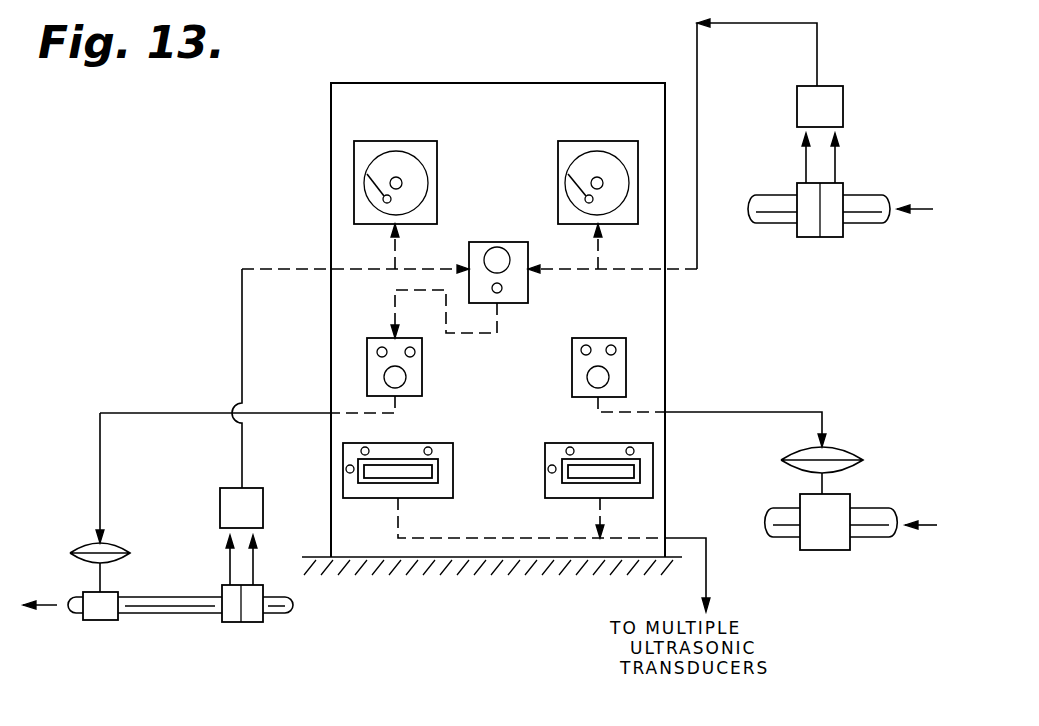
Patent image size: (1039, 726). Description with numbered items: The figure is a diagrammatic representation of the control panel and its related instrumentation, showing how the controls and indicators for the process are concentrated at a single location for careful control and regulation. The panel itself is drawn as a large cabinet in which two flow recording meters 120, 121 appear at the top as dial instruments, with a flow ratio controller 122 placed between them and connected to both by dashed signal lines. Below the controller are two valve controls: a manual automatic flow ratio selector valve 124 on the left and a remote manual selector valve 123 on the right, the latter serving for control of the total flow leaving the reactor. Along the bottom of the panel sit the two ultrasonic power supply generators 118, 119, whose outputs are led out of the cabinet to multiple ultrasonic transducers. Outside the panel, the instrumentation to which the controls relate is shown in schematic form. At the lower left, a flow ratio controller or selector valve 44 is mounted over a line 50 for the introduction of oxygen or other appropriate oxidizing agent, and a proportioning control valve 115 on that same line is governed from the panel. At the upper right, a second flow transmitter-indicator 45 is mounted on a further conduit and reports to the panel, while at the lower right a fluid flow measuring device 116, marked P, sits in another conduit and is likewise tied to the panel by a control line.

The flow recording meter 120 is at (360, 155).
The flow recording meter 121 is at (588, 141).
The flow ratio controller 122 is at (490, 242).
The remote manual selector valve 123 is at (625, 357).
The manual automatic flow ratio selector valve 124 is at (372, 365).
The ultrasonic power supply generator 118 is at (447, 457).
The ultrasonic power supply generator 119 is at (658, 465).
The flow transmitter-indicator 45 is at (838, 105).
The flow ratio controller 44 is at (232, 500).
The line 50 is at (280, 607).
The proportioning control valve 115 is at (102, 615).
The fluid flow measuring device 116 is at (833, 543).